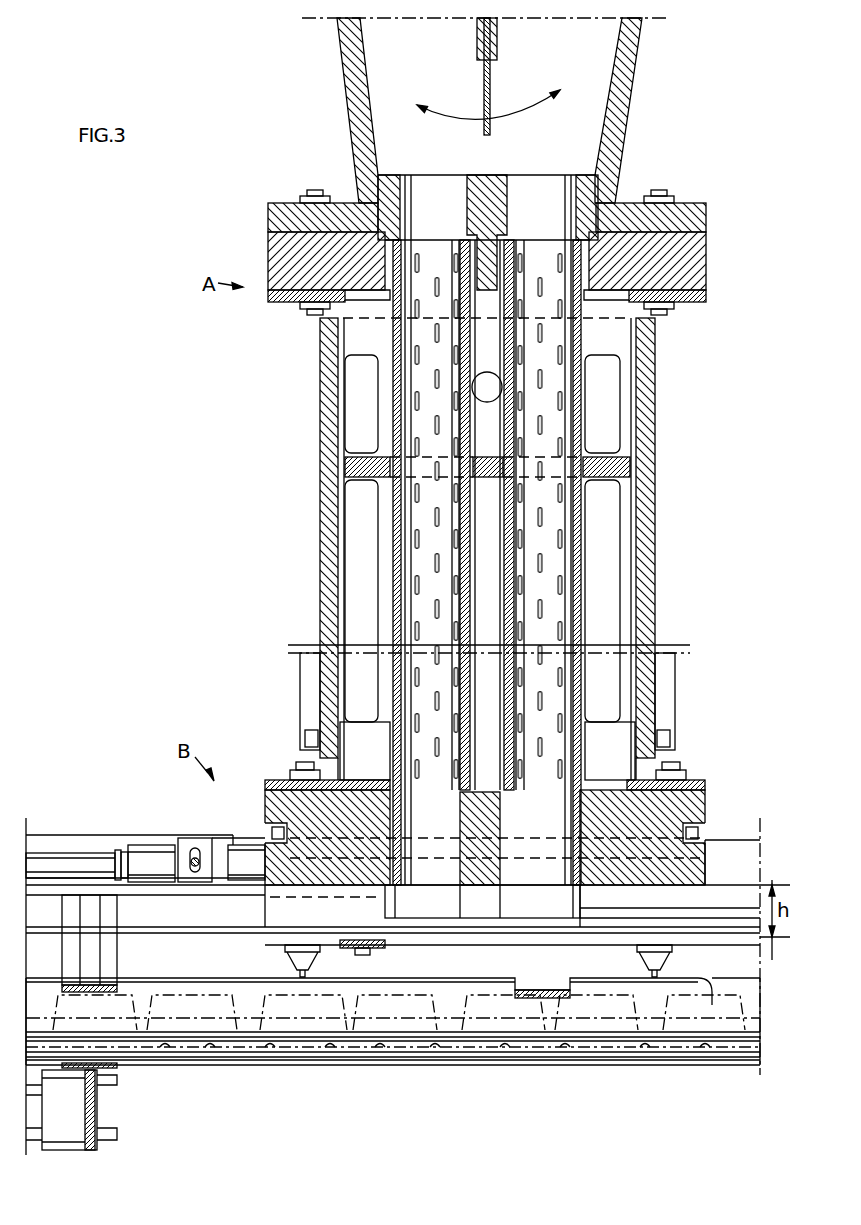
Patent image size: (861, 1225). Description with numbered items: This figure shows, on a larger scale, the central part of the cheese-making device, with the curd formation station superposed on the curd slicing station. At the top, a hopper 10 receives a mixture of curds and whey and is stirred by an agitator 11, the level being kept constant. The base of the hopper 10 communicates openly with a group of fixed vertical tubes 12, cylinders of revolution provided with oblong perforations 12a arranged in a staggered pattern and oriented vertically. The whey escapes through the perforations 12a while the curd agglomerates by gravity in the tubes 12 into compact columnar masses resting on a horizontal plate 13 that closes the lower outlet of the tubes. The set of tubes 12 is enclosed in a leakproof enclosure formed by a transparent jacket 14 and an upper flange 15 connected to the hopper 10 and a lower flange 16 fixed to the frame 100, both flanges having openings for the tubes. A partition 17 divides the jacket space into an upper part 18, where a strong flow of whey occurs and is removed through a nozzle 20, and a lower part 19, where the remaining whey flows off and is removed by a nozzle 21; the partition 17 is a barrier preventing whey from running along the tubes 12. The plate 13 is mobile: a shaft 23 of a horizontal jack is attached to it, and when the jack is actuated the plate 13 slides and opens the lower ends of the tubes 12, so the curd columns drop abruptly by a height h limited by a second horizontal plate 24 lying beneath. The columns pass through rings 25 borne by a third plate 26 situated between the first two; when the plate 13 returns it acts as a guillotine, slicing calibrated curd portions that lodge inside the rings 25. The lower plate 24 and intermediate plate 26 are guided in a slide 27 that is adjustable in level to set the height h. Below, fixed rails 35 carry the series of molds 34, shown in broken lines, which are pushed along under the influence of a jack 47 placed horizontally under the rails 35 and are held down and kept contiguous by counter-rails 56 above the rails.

The hopper 10 is at (342, 62).
The agitator 11 is at (490, 98).
The fixed vertical tubes 12 is at (395, 497).
The oblong perforations 12a is at (433, 517).
The horizontal plate 13 is at (240, 893).
The transparent jacket 14 is at (322, 420).
The upper flange 15 is at (270, 254).
The lower flange 16 is at (695, 805).
The partition 17 is at (612, 466).
The upper part 18 is at (588, 399).
The lower part 19 is at (587, 618).
The nozzle 20 is at (485, 402).
The nozzle 21 is at (243, 857).
The shaft 23 is at (80, 862).
The second horizontal plate 24 is at (180, 927).
The rings 25 is at (428, 902).
The third plate 26 is at (708, 930).
The slide 27 is at (623, 943).
The mold 34 is at (308, 1030).
The rails 35 is at (245, 1050).
The jack 47 is at (75, 1107).
The counter-rails 56 is at (503, 988).
The frame 100 is at (128, 847).